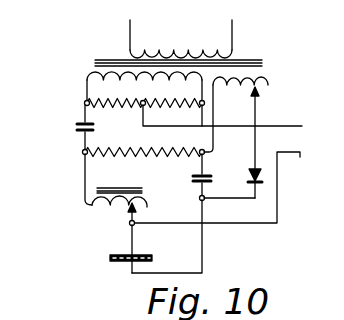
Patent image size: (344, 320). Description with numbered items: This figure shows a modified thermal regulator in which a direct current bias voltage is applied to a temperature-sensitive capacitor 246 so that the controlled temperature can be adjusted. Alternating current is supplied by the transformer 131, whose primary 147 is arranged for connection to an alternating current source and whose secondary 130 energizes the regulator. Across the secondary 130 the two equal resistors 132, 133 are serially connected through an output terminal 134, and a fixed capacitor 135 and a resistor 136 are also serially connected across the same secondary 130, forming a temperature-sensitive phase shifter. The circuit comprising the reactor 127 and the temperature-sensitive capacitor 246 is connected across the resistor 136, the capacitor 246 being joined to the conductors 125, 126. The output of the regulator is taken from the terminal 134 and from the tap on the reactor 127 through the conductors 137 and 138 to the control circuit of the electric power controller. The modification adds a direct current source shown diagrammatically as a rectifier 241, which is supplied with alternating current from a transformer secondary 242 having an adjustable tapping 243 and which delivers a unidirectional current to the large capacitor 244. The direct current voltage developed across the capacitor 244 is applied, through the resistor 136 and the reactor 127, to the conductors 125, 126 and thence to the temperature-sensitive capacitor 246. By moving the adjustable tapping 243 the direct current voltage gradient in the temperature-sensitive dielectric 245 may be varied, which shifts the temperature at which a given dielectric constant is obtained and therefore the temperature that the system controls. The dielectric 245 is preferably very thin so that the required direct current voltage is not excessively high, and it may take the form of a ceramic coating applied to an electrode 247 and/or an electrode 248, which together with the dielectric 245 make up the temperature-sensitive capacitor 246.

The conductor 125 is at (129, 223).
The conductor 126 is at (202, 246).
The reactor 127 is at (94, 204).
The transformer secondary 130 is at (141, 81).
The transformer 131 is at (98, 58).
The resistor 132 is at (128, 106).
The resistor 133 is at (163, 107).
The output terminal 134 is at (145, 100).
The fixed capacitor 135 is at (82, 124).
The resistor 136 is at (160, 150).
The conductor 137 is at (300, 128).
The conductor 138 is at (300, 155).
The transformer primary 147 is at (184, 47).
The rectifier 241 is at (247, 178).
The transformer secondary 242 is at (243, 88).
The adjustable tapping 243 is at (258, 92).
The large capacitor 244 is at (197, 179).
The temperature-sensitive dielectric 245 is at (110, 257).
The temperature-sensitive capacitor 246 is at (127, 268).
The electrode 247 is at (110, 262).
The electrode 248 is at (125, 255).